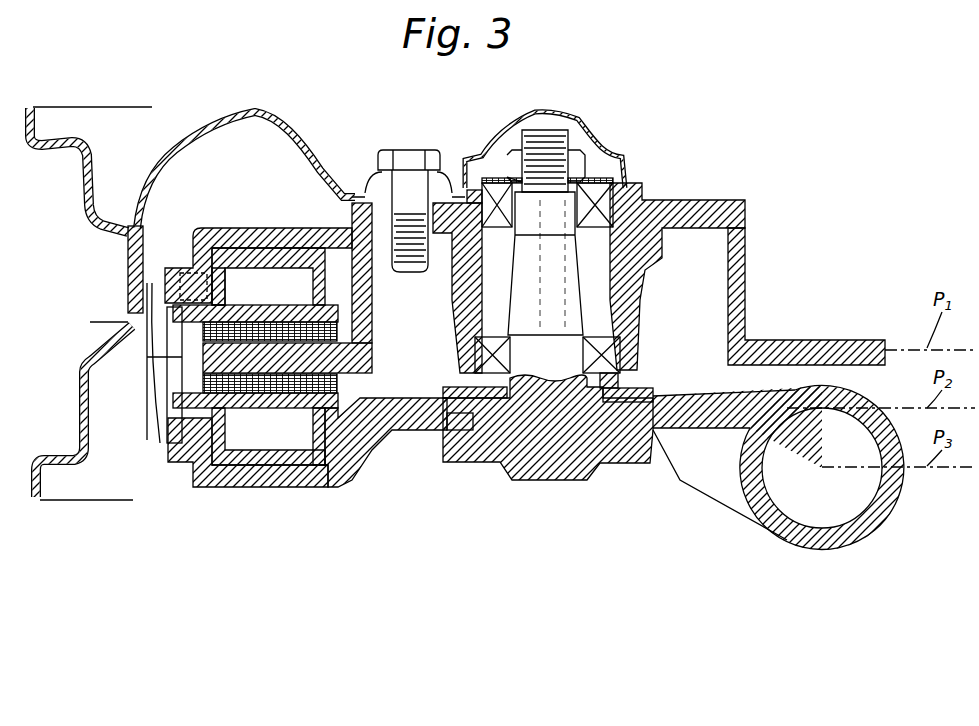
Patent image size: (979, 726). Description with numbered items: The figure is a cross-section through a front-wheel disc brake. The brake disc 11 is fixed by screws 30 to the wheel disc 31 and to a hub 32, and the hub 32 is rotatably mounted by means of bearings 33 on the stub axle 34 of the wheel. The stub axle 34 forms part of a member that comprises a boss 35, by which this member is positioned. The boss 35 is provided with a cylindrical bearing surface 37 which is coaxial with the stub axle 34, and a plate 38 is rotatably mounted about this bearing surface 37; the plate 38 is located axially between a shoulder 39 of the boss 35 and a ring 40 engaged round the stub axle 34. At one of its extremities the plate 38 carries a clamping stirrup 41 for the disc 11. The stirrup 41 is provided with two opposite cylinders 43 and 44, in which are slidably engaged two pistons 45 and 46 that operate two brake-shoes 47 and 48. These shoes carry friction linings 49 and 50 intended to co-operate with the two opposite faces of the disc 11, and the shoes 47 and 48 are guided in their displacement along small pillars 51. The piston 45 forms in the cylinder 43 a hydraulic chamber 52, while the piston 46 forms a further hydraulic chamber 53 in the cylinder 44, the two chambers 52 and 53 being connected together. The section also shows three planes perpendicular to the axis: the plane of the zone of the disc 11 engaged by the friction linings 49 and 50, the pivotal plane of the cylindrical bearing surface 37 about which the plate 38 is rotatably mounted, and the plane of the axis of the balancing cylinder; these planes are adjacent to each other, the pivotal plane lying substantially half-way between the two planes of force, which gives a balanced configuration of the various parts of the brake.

The disc 11 is at (203, 360).
The screws 30 is at (407, 152).
The wheel disc 31 is at (263, 110).
The hub 32 is at (457, 292).
The bearings 33 is at (608, 208).
The stub axle 34 is at (520, 296).
The boss 35 is at (470, 455).
The cylindrical bearing surface 37 is at (463, 416).
The plate 38 is at (387, 428).
The shoulder 39 is at (447, 428).
The ring 40 is at (452, 382).
The clamping stirrup 41 is at (193, 470).
The cylinder 43 is at (303, 250).
The cylinder 44 is at (322, 453).
The piston 45 is at (218, 287).
The piston 46 is at (218, 432).
The brake-shoe 47 is at (133, 320).
The brake-shoe 48 is at (177, 405).
The friction lining 49 is at (302, 308).
The friction lining 50 is at (293, 400).
The small pillars 51 is at (182, 340).
The hydraulic chamber 52 is at (216, 244).
The hydraulic chamber 53 is at (217, 470).